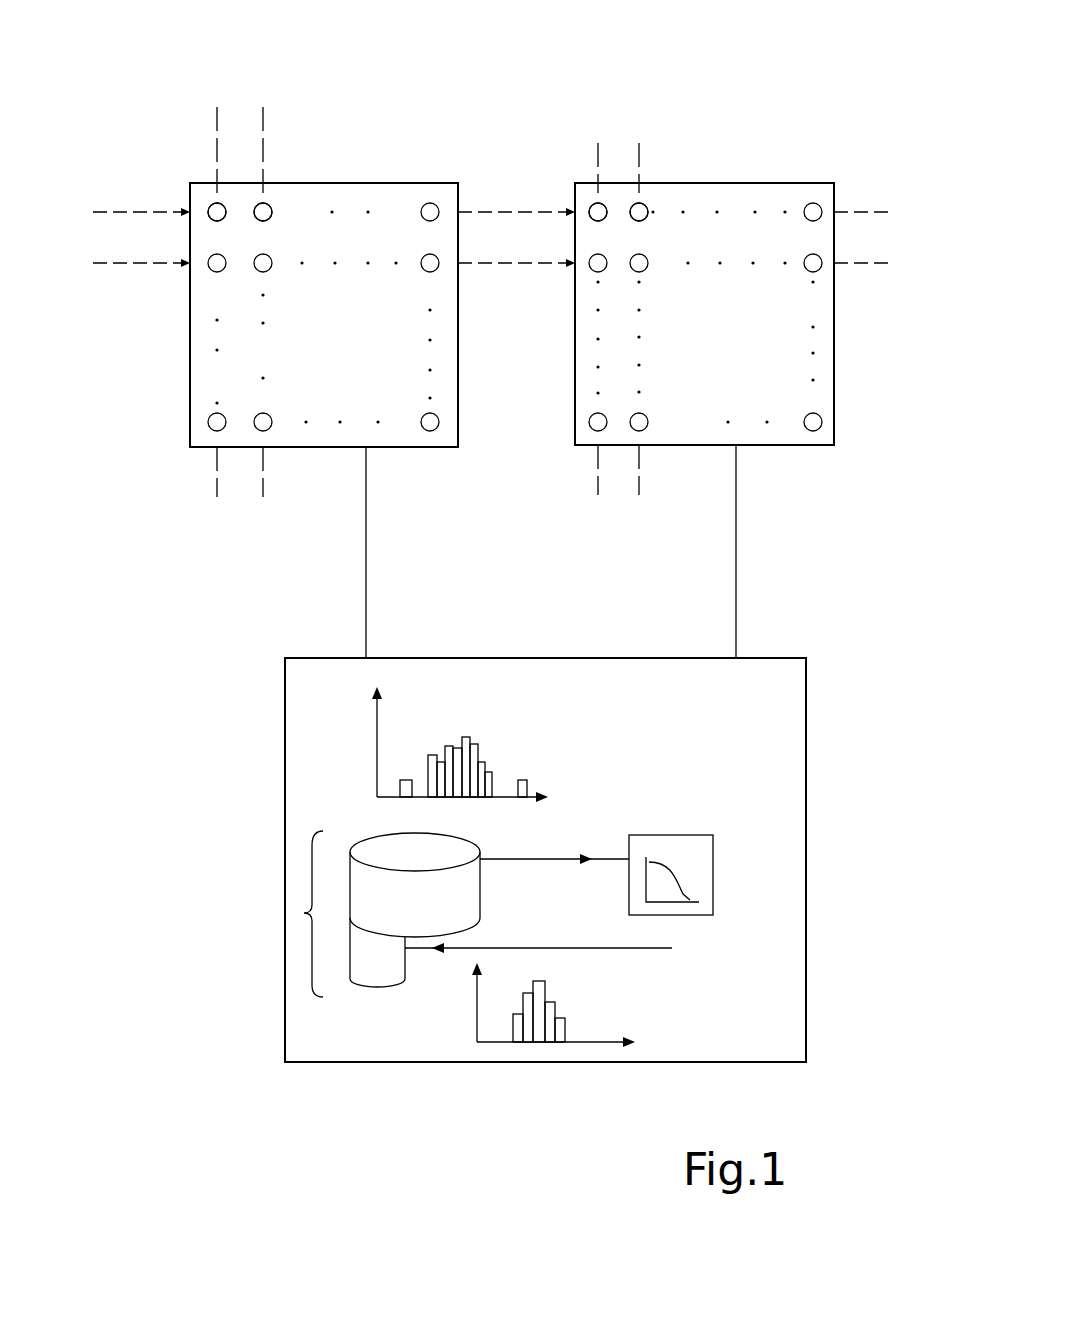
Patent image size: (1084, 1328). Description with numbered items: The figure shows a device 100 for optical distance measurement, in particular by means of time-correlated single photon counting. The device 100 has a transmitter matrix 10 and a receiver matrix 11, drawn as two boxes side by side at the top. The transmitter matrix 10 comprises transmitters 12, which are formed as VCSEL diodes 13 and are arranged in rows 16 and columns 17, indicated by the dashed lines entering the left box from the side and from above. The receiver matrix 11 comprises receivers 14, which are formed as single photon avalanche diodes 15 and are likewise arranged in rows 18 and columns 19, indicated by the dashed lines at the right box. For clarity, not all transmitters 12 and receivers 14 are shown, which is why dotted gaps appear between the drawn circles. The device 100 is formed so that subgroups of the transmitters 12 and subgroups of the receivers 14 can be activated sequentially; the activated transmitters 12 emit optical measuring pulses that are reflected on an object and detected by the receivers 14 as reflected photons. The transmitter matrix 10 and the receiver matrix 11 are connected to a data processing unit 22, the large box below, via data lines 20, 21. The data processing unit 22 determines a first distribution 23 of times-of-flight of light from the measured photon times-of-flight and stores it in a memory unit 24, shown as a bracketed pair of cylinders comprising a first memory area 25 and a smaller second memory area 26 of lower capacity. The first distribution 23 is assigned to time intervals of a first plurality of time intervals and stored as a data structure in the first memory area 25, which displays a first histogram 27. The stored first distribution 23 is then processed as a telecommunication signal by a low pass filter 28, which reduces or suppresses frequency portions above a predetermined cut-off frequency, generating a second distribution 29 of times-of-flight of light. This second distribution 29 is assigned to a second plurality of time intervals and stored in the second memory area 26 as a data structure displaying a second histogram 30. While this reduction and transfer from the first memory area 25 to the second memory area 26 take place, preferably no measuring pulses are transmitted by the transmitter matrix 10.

The device 100 is at (920, 72).
The transmitter matrix 10 is at (402, 183).
The receiver matrix 11 is at (613, 183).
The transmitters 12 is at (272, 216).
The VCSEL diodes 13 is at (207, 210).
The receivers 14 is at (593, 204).
The single photon avalanche diodes 15 is at (592, 210).
The rows 16 is at (113, 207).
The columns 17 is at (213, 128).
The rows 18 is at (877, 207).
The columns 19 is at (598, 488).
The data line 20 is at (366, 548).
The data line 21 is at (736, 545).
The data processing unit 22 is at (806, 830).
The first distribution of times-of-flight of light 23 is at (530, 694).
The memory unit 24 is at (304, 913).
The first memory area 25 is at (380, 838).
The second memory area 26 is at (370, 987).
The first histogram 27 is at (377, 745).
The low pass filter 28 is at (713, 874).
The second distribution of times-of-flight of light 29 is at (682, 1091).
The second histogram 30 is at (495, 1043).